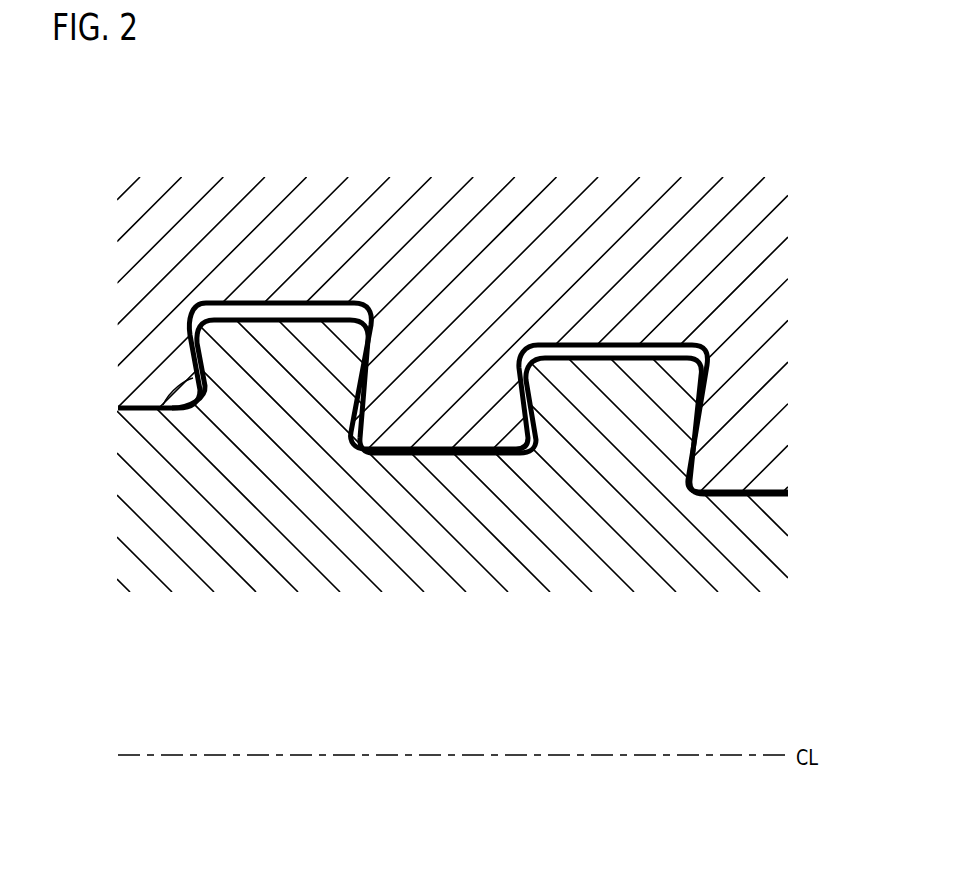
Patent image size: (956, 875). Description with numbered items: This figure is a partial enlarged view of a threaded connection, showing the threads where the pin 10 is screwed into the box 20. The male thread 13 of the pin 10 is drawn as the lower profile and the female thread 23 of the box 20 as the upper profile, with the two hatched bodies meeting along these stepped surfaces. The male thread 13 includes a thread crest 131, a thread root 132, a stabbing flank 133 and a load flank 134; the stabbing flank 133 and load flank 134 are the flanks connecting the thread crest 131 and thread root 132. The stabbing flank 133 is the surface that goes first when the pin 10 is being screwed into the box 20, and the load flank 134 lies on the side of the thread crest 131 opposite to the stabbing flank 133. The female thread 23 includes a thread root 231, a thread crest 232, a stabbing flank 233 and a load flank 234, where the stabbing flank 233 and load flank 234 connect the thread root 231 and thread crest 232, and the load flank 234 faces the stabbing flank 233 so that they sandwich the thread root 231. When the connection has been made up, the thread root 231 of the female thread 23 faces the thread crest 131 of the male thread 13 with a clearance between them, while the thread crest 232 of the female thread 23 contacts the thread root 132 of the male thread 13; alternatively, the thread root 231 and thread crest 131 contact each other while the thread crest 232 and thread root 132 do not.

The pin 10 is at (744, 603).
The box 20 is at (743, 158).
The male thread 13 is at (448, 386).
The female thread 23 is at (453, 386).
The thread crest 131 is at (283, 318).
The thread root 132 is at (445, 450).
The stabbing flank 133 is at (369, 390).
The load flank 134 is at (164, 410).
The thread root 231 is at (263, 306).
The thread crest 232 is at (490, 452).
The stabbing flank 233 is at (367, 360).
The load flank 234 is at (200, 358).